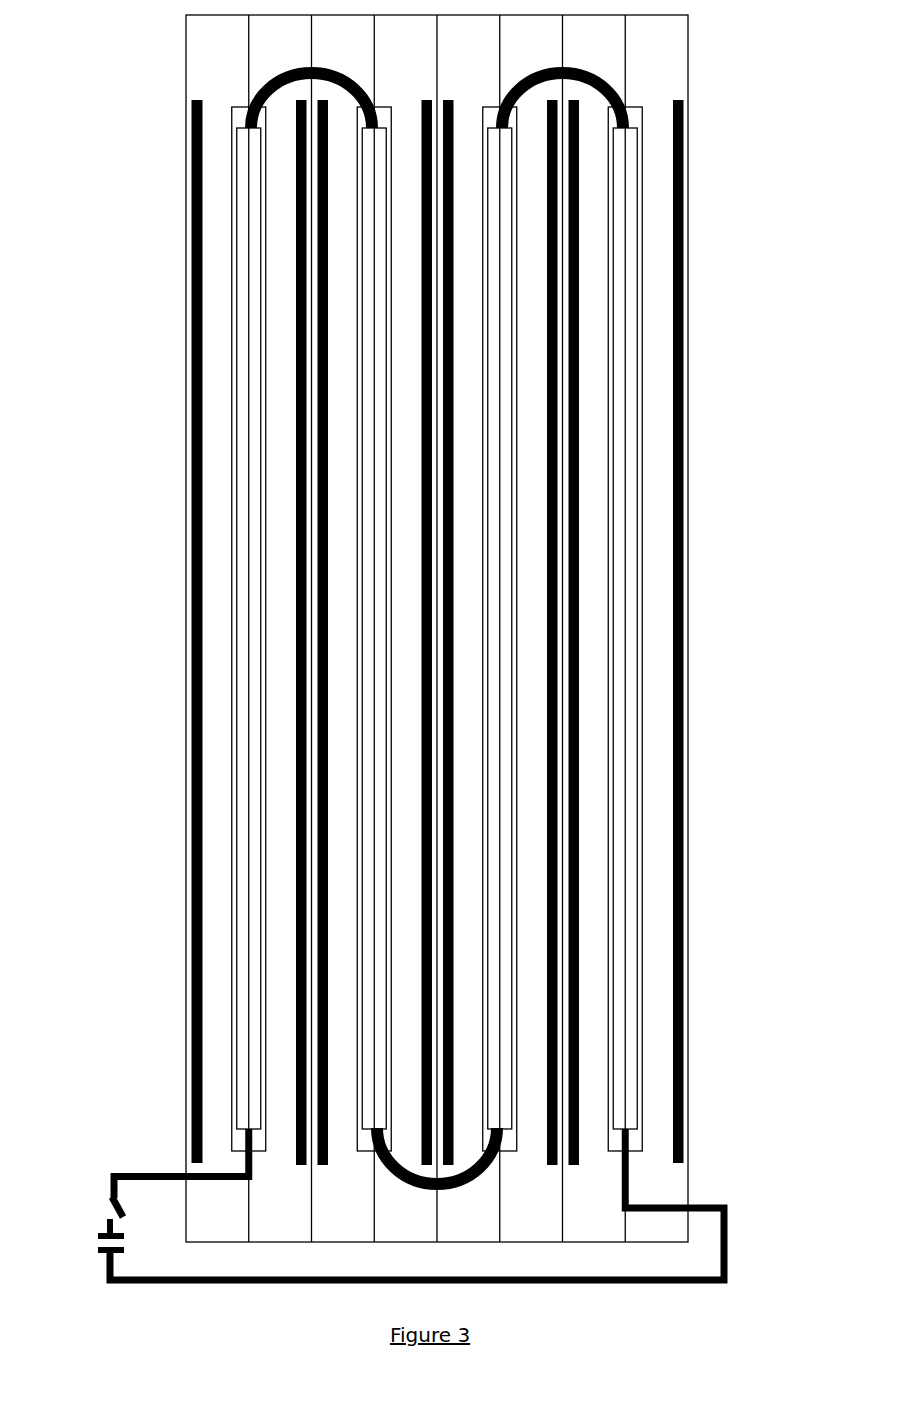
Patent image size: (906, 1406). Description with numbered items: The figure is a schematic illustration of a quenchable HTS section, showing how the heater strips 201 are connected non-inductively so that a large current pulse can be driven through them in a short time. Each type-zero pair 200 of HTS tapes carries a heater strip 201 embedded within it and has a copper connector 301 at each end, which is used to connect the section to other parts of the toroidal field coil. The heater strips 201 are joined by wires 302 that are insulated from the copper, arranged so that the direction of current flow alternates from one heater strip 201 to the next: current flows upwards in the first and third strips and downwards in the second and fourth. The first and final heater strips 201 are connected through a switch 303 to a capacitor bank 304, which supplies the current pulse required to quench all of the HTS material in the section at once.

The copper connector 301 is at (205, 43).
The wires 302 is at (274, 74).
The heater strip 201 is at (255, 212).
The type-0 pair 200 is at (250, 1262).
The switch 303 is at (110, 1212).
The capacitor bank 304 is at (98, 1257).